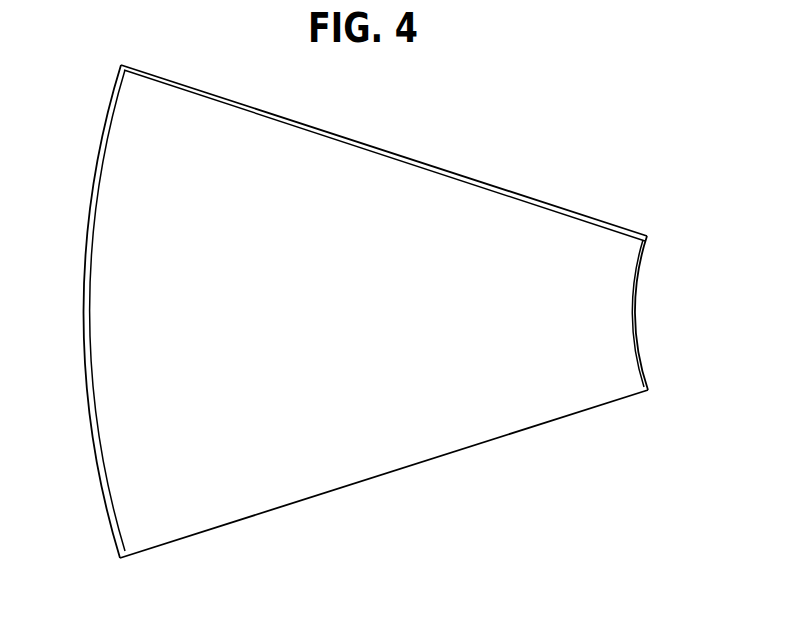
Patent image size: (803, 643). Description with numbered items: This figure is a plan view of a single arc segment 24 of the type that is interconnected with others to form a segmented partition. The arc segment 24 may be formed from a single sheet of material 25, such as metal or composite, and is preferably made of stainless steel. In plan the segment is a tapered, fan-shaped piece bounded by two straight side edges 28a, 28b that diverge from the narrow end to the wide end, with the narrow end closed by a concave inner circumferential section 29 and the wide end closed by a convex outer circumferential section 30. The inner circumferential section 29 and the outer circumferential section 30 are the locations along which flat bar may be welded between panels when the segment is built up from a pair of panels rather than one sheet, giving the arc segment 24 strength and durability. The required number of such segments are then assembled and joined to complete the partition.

The arc segment 24 is at (378, 326).
The single sheet of material 25 is at (543, 222).
The first side edge 28a is at (257, 517).
The second side edge 28b is at (442, 165).
The inner circumferential section 29 is at (618, 337).
The outer circumferential section 30 is at (103, 503).